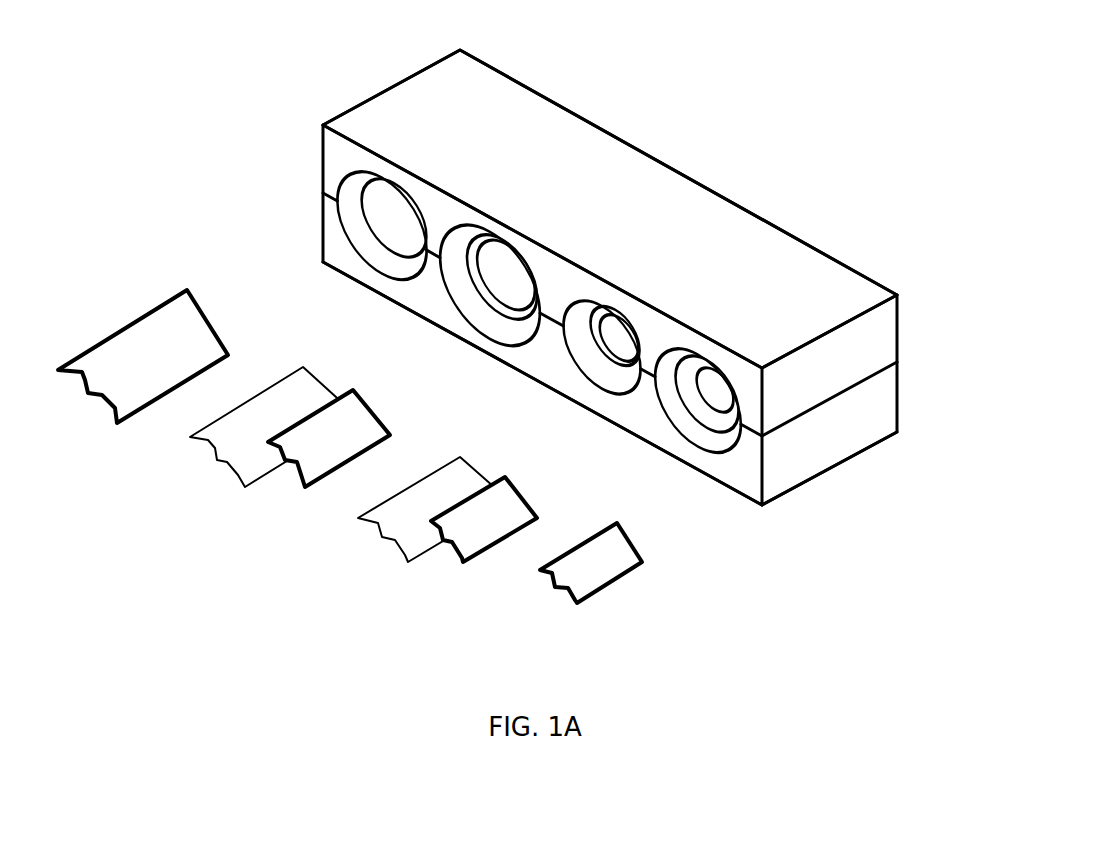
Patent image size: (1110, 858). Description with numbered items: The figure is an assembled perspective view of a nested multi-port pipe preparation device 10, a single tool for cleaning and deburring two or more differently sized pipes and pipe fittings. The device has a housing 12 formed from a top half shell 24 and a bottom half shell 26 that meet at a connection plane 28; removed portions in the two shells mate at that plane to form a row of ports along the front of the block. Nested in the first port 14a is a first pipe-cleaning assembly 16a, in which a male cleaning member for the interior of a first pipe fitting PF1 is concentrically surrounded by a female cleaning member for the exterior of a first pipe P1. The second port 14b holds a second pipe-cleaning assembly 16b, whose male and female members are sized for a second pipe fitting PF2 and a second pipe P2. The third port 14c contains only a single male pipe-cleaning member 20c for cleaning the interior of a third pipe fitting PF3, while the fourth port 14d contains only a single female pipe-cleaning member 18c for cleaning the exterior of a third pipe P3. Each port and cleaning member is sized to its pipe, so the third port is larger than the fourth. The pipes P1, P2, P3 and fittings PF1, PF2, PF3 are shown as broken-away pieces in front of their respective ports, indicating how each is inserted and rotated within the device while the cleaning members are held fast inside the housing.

The nested multi-port pipe preparation device 10 is at (783, 80).
The housing 12 is at (853, 240).
The first port 14a is at (492, 243).
The second port 14b is at (604, 304).
The third port 14c is at (385, 180).
The fourth port 14d is at (696, 356).
The first pipe-cleaning assembly 16a is at (507, 290).
The second pipe-cleaning assembly 16b is at (622, 347).
The single female pipe-cleaning member 18c is at (717, 415).
The single male pipe-cleaning member 20c is at (402, 235).
The top half shell 24 is at (900, 312).
The bottom half shell 26 is at (900, 403).
The connection plane 28 is at (827, 400).
The first pipe P1 is at (257, 483).
The second pipe P2 is at (418, 558).
The third pipe P3 is at (597, 588).
The first pipe fitting PF1 is at (323, 482).
The second pipe fitting PF2 is at (483, 555).
The third pipe fitting PF3 is at (140, 413).